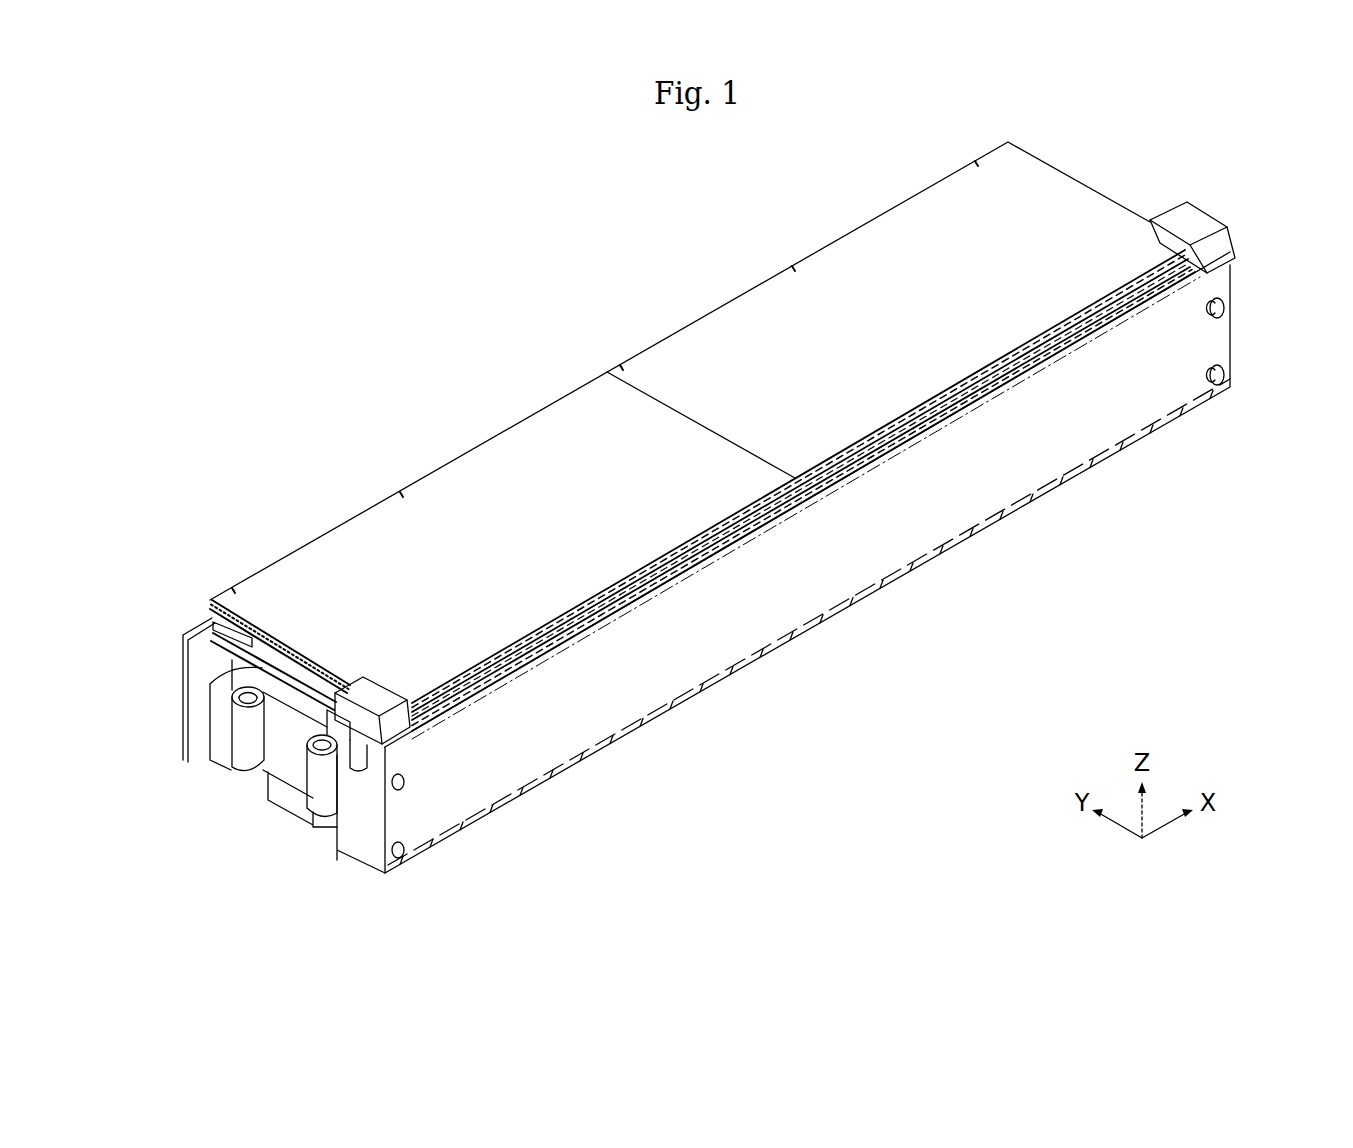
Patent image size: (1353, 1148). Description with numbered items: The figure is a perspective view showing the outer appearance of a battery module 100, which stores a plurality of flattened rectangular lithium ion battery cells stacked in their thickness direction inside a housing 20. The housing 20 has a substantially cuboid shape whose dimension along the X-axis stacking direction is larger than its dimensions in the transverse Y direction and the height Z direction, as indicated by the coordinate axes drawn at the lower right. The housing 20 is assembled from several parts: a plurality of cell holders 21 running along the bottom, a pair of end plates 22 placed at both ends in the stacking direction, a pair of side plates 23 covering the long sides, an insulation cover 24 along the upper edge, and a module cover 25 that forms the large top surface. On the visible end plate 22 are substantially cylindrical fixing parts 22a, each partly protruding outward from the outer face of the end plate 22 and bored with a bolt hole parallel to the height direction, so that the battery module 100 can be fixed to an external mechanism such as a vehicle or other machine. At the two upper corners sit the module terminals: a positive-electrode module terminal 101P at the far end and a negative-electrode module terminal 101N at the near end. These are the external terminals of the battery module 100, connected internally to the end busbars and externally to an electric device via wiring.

The battery module 100 is at (360, 312).
The housing 20 is at (883, 206).
The module cover 25 is at (762, 315).
The side plate 23 is at (208, 617).
The insulation cover 24 is at (285, 663).
The end plate 22 is at (198, 672).
The fixing part 22a is at (247, 742).
The cell holder 21 is at (453, 842).
The negative-electrode module terminal 101N is at (380, 676).
The positive-electrode module terminal 101P is at (1211, 205).